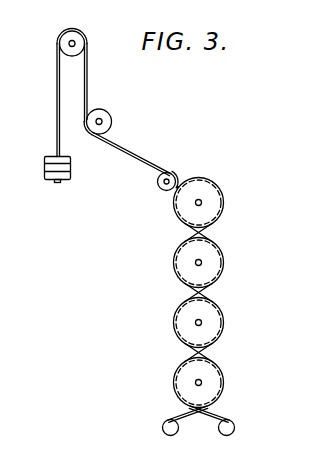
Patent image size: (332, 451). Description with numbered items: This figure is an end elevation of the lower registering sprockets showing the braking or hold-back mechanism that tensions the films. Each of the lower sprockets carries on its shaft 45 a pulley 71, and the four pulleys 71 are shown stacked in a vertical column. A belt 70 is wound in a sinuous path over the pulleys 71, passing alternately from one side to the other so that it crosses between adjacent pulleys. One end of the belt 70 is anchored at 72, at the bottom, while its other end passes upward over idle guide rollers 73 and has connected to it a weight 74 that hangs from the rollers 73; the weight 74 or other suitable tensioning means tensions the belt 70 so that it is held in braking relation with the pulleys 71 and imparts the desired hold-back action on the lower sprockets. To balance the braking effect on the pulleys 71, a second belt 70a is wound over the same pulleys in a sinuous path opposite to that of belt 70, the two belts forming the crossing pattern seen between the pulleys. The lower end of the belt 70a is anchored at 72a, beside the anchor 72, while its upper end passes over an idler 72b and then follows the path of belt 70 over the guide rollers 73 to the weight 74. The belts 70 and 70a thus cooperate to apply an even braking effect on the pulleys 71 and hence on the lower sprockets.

The idle guide rollers 73 is at (58, 36).
The weights 74 is at (46, 157).
The idler 72b is at (157, 187).
The pulleys 71 is at (219, 258).
The shafts 45 is at (194, 263).
The belt 70 is at (213, 411).
The second belt 70a is at (174, 406).
The anchor for belt 70a 72a is at (162, 424).
The anchor for belt 70 72 is at (232, 422).